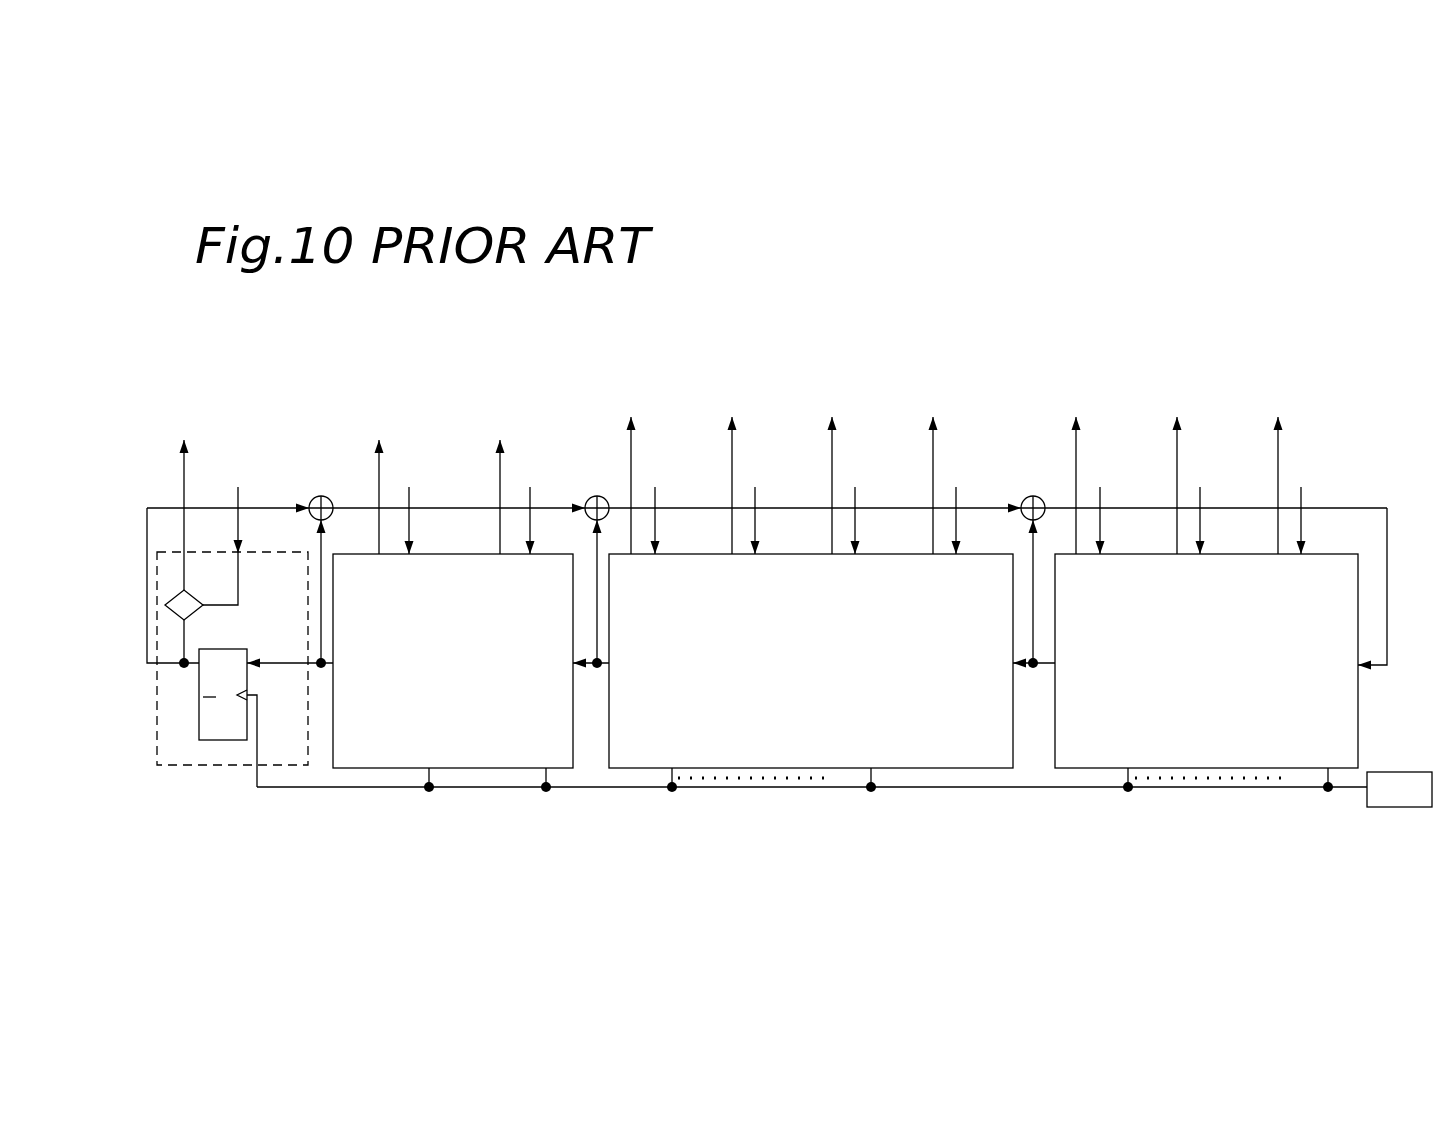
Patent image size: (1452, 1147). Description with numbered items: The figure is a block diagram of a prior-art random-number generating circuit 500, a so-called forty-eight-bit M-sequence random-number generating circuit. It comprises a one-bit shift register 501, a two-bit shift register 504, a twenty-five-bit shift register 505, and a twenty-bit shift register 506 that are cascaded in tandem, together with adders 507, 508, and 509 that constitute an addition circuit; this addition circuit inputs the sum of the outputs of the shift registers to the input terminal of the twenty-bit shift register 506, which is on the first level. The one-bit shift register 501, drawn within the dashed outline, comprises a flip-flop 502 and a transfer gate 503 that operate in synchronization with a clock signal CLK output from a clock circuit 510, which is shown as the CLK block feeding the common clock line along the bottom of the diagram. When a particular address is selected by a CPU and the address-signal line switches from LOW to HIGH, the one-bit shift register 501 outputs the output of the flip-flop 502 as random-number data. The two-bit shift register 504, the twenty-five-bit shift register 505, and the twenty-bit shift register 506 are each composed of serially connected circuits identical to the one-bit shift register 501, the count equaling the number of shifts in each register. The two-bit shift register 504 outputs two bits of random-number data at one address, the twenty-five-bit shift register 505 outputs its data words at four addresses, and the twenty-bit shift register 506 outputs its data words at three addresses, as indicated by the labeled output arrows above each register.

The random-number generating circuit 500 is at (735, 352).
The 1-bit shift register 501 is at (198, 765).
The flip-flop 502 is at (237, 649).
The transfer gate 503 is at (205, 585).
The 2-bit shift register 504 is at (478, 712).
The 25-bit shift register 505 is at (813, 722).
The 20-bit shift register 506 is at (1218, 724).
The adder 507 is at (321, 496).
The adder 508 is at (597, 496).
The adder 509 is at (1033, 496).
The clock circuit 510 is at (1402, 772).